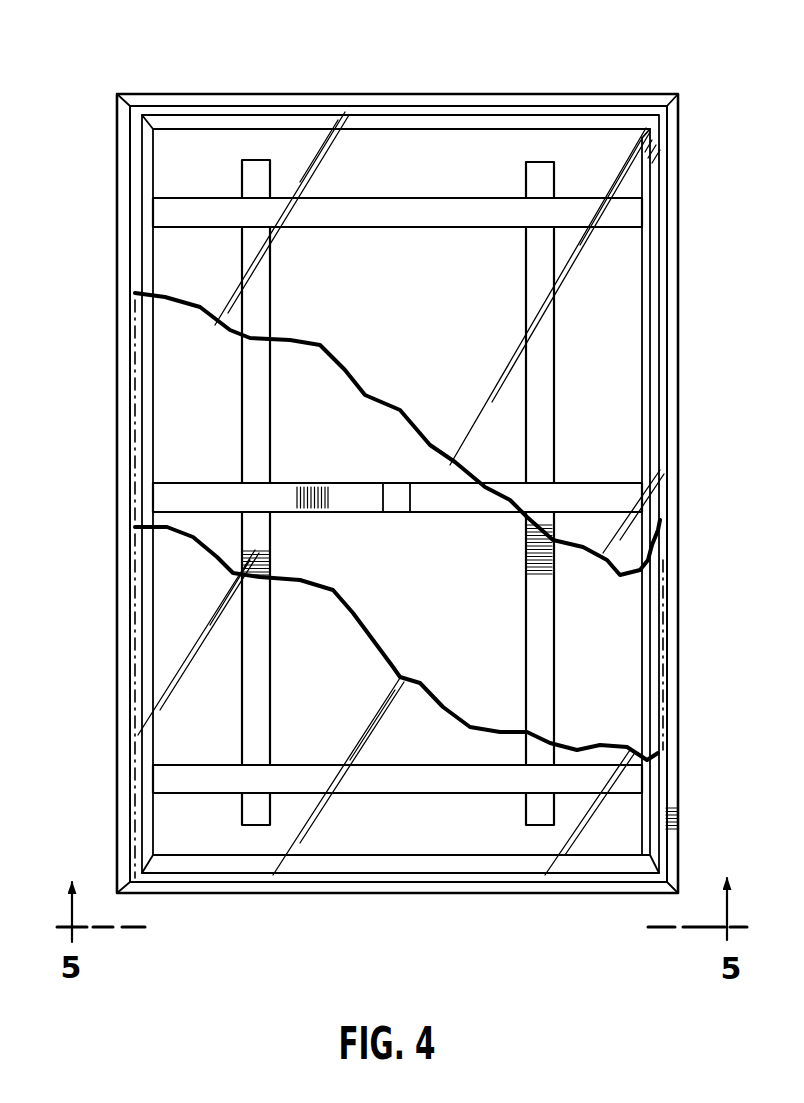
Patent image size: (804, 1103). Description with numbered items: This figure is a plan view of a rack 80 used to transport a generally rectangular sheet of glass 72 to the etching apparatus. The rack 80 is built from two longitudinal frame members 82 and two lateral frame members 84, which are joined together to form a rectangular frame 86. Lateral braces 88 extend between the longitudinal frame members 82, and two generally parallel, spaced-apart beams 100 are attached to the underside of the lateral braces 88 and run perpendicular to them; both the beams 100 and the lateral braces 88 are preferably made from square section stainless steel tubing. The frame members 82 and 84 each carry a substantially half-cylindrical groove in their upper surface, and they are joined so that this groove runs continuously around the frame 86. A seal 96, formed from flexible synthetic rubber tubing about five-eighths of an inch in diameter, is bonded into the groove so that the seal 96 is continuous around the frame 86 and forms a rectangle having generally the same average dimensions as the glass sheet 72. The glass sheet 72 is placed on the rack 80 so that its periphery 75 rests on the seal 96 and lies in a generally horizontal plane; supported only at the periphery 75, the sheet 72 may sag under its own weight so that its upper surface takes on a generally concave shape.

The sheet of glass 72 is at (593, 168).
The periphery 75 is at (496, 111).
The rack 80 is at (492, 898).
The longitudinal frame member 82 is at (679, 247).
The lateral frame member 84 is at (243, 93).
The rectangular frame 86 is at (576, 93).
The lateral brace 88 is at (165, 502).
The seal 96 is at (399, 103).
The beam 100 is at (247, 397).